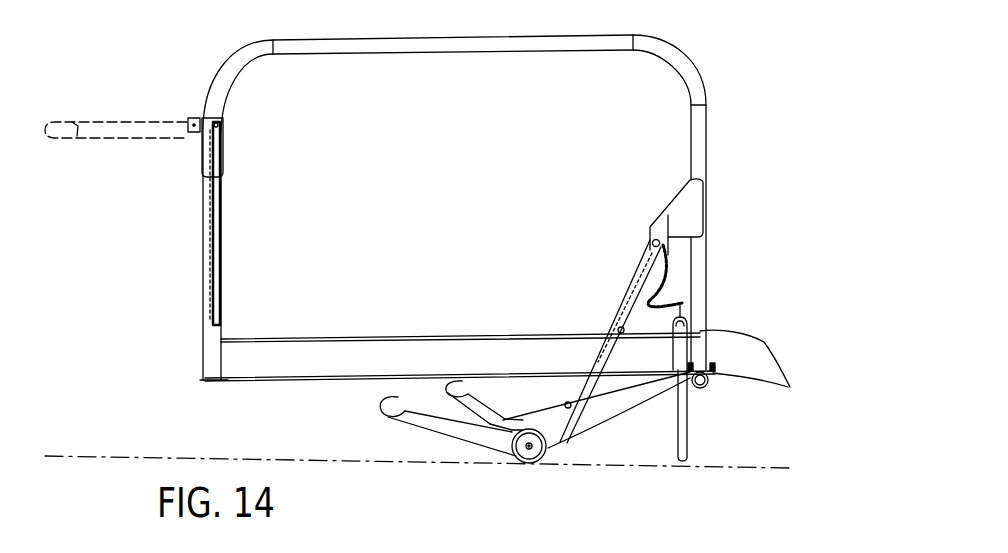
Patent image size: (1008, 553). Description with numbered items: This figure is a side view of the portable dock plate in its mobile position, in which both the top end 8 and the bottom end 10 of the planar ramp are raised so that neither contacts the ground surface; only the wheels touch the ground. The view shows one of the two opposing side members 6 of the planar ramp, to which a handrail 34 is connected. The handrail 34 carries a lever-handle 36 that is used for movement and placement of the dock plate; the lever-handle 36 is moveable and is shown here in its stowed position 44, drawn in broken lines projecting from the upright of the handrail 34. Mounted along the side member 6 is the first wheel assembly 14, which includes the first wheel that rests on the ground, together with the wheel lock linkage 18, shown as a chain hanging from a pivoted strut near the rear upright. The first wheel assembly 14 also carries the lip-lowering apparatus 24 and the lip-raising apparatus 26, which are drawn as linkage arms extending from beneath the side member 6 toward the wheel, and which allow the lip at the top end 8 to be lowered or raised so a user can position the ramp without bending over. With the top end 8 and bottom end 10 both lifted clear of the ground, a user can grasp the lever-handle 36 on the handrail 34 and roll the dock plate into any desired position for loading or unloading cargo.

The side member 6 is at (642, 350).
The top end 8 is at (743, 348).
The bottom end 10 is at (270, 360).
The first wheel assembly 14 is at (660, 390).
The wheel lock linkage 18 is at (682, 298).
The lip-lowering apparatus 24 is at (443, 389).
The lip-raising apparatus 26 is at (377, 404).
The handrail 34 is at (660, 45).
The lever-handle 36 is at (213, 216).
The stowed position 44 is at (212, 147).